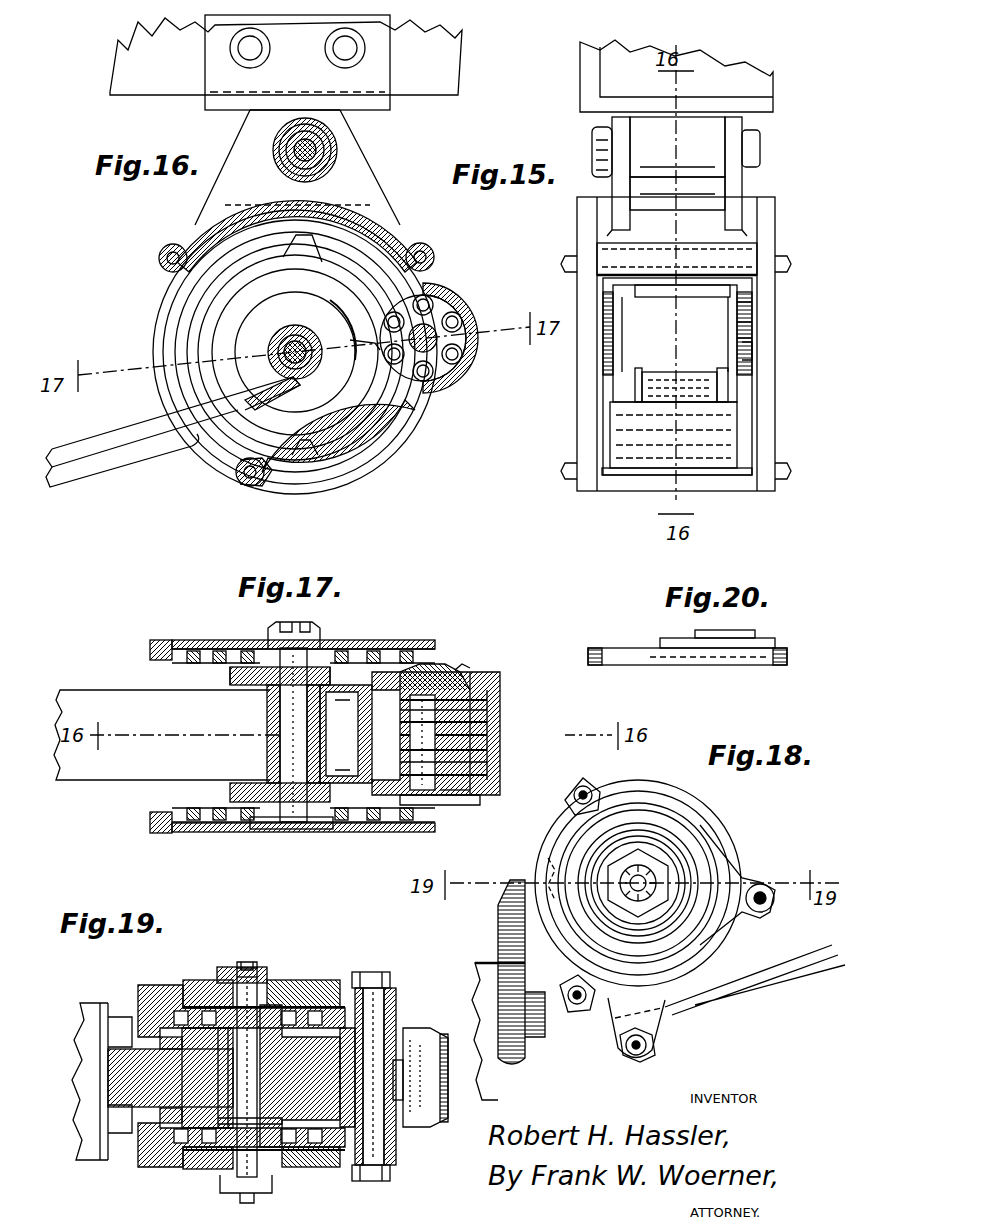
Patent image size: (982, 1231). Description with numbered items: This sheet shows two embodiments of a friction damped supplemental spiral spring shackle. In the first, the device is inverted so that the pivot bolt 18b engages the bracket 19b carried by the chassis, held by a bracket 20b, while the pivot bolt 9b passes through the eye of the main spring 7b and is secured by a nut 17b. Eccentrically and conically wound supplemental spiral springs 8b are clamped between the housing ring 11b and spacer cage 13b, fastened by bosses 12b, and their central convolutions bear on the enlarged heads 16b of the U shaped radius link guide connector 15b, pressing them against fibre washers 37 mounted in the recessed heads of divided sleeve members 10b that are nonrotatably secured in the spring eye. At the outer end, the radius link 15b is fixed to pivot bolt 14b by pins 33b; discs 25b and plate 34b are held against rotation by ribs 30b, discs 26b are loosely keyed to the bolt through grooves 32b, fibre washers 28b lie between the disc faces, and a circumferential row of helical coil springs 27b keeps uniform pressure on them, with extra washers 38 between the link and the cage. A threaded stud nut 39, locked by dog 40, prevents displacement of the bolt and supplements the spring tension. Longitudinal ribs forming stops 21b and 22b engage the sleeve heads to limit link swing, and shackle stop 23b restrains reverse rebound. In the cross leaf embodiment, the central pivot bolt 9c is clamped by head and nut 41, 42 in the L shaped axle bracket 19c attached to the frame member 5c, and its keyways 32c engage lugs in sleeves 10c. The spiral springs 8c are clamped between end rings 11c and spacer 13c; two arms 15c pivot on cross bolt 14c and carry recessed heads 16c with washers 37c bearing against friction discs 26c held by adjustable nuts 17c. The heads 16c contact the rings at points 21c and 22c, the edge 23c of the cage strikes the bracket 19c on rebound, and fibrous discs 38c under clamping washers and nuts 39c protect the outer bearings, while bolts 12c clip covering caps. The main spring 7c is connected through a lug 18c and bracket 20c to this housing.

In FIG. 18, the frame bracket 5c is at (493, 1078).
In FIG. 19, the frame bracket 5c is at (80, 1040).
In FIG. 16, the main spring 7b is at (122, 445).
In FIG. 17, the main spring 7b is at (83, 698).
In FIG. 18, the main spring 7c is at (763, 980).
In FIG. 19, the main spring 7c is at (432, 1105).
In FIG. 16, the supplemental spiral springs 8b is at (183, 312).
In FIG. 17, the supplemental spiral springs 8b is at (372, 657).
In FIG. 20, the supplemental spiral spring elements 8c is at (662, 640).
In FIG. 19, the supplemental spiral spring elements 8c is at (318, 1010).
In FIG. 16, the pivot bolt 9b is at (305, 352).
In FIG. 17, the pivot bolt 9b is at (292, 830).
In FIG. 19, the central pivot bolt 9c is at (258, 1086).
In FIG. 16, the divided sleeve members 10b is at (287, 343).
In FIG. 17, the divided sleeve members 10b is at (275, 722).
In FIG. 19, the sleeve members 10c is at (212, 1000).
In FIG. 16, the housing ring 11b is at (155, 343).
In FIG. 15, the housing ring 11b is at (582, 226).
In FIG. 17, the housing ring 11b is at (150, 648).
In FIG. 18, the end rings 11c is at (722, 950).
In FIG. 19, the end rings 11c is at (138, 995).
In FIG. 16, the bolt boss 12b is at (163, 256).
In FIG. 15, the bolt boss 12b is at (788, 262).
In FIG. 18, the bolts 12c is at (592, 790).
In FIG. 16, the spacer cage 13b is at (212, 232).
In FIG. 15, the spacer cage 13b is at (712, 448).
In FIG. 19, the spacer 13c is at (416, 1143).
In FIG. 16, the pivot bolt 14b is at (443, 375).
In FIG. 15, the pivot bolt 14b is at (618, 332).
In FIG. 17, the pivot bolt 14b is at (426, 742).
In FIG. 18, the cross bolt 14c is at (762, 893).
In FIG. 19, the cross bolt 14c is at (378, 1022).
In FIG. 16, the radius link guide connector 15b is at (338, 382).
In FIG. 15, the radius link guide connector 15b is at (675, 334).
In FIG. 17, the radius link guide connector 15b is at (486, 676).
In FIG. 18, the arms 15c is at (708, 860).
In FIG. 19, the arms 15c is at (358, 988).
In FIG. 15, the enlarged heads 16b is at (752, 294).
In FIG. 17, the enlarged heads 16b is at (230, 674).
In FIG. 18, the enlarged recessed heads 16c is at (692, 850).
In FIG. 19, the enlarged recessed heads 16c is at (185, 1003).
In FIG. 17, the nut 17b is at (267, 629).
In FIG. 18, the adjustable nuts 17c is at (655, 897).
In FIG. 19, the adjustable nuts 17c is at (250, 960).
In FIG. 16, the pivot bolt 18b is at (285, 146).
In FIG. 15, the pivot bolt 18b is at (752, 132).
In FIG. 18, the pivot pin 18c is at (647, 1047).
In FIG. 16, the bracket 19b is at (333, 148).
In FIG. 15, the bracket 19b is at (677, 163).
In FIG. 18, the L shaped axle bracket 19c is at (513, 1052).
In FIG. 19, the L shaped axle bracket 19c is at (204, 1078).
In FIG. 16, the bracket 20b is at (340, 185).
In FIG. 15, the bracket 20b is at (705, 163).
In FIG. 18, the bracket 20c is at (664, 1027).
In FIG. 16, the stop element 21b is at (284, 242).
In FIG. 15, the stop element 21b is at (677, 376).
In FIG. 18, the stop point 21c is at (648, 815).
In FIG. 16, the stop element 22b is at (306, 466).
In FIG. 18, the stop point 22c is at (652, 984).
In FIG. 16, the shackle stop 23b is at (240, 472).
In FIG. 18, the edge of housing cage 23c is at (560, 862).
In FIG. 17, the discs 25b is at (500, 735).
In FIG. 17, the discs 26b is at (500, 712).
In FIG. 18, the friction discs 26c is at (648, 848).
In FIG. 19, the friction discs 26c is at (232, 968).
In FIG. 16, the helical coil springs 27b is at (427, 303).
In FIG. 17, the helical coil springs 27b is at (368, 735).
In FIG. 17, the fibre or leather washers 28b is at (500, 702).
In FIG. 16, the ribs 30b is at (366, 353).
In FIG. 17, the ribs 30b is at (365, 715).
In FIG. 16, the grooves 32b is at (333, 296).
In FIG. 19, the slots or keyways 32c is at (266, 1000).
In FIG. 17, the pins 33b is at (462, 800).
In FIG. 17, the plate 34b is at (478, 796).
In FIG. 17, the fibre or leather washers 37 is at (248, 685).
In FIG. 18, the washers or discs 37c is at (665, 850).
In FIG. 19, the washers or discs 37c is at (302, 980).
In FIG. 15, the washers 38 is at (632, 368).
In FIG. 17, the washers 38 is at (496, 688).
In FIG. 19, the discs 38c is at (395, 998).
In FIG. 15, the threaded stud nut 39 is at (752, 316).
In FIG. 17, the threaded stud nut 39 is at (425, 668).
In FIG. 19, the clamping washers and nuts 39c is at (388, 974).
In FIG. 15, the dog 40 is at (752, 350).
In FIG. 17, the dog 40 is at (466, 664).
In FIG. 19, the head 41 is at (272, 1121).
In FIG. 19, the nut 42 is at (304, 1056).